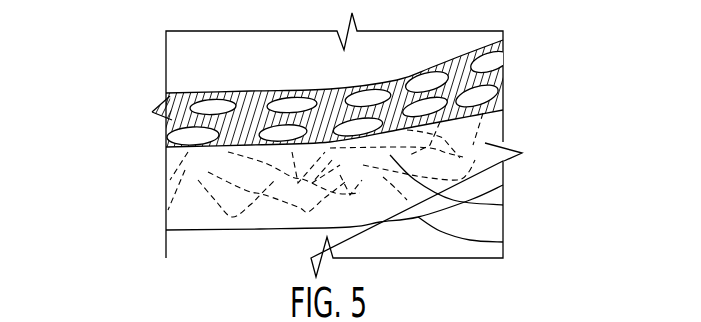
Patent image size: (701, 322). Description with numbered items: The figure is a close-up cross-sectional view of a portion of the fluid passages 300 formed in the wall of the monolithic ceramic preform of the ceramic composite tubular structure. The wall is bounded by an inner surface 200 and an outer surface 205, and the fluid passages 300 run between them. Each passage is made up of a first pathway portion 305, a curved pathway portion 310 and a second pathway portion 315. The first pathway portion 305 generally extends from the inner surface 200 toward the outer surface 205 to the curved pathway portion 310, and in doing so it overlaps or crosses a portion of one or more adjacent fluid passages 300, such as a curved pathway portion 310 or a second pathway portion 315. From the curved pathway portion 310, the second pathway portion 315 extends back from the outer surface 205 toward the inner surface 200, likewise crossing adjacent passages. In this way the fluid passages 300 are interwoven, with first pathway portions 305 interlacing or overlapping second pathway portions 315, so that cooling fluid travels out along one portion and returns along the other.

The inner surface 200 is at (332, 72).
The outer surface 205 is at (503, 242).
The fluid passages 300 is at (503, 205).
The first pathway portion 305 is at (178, 110).
The curved pathway portion 310 is at (307, 207).
The second pathway portion 315 is at (340, 165).